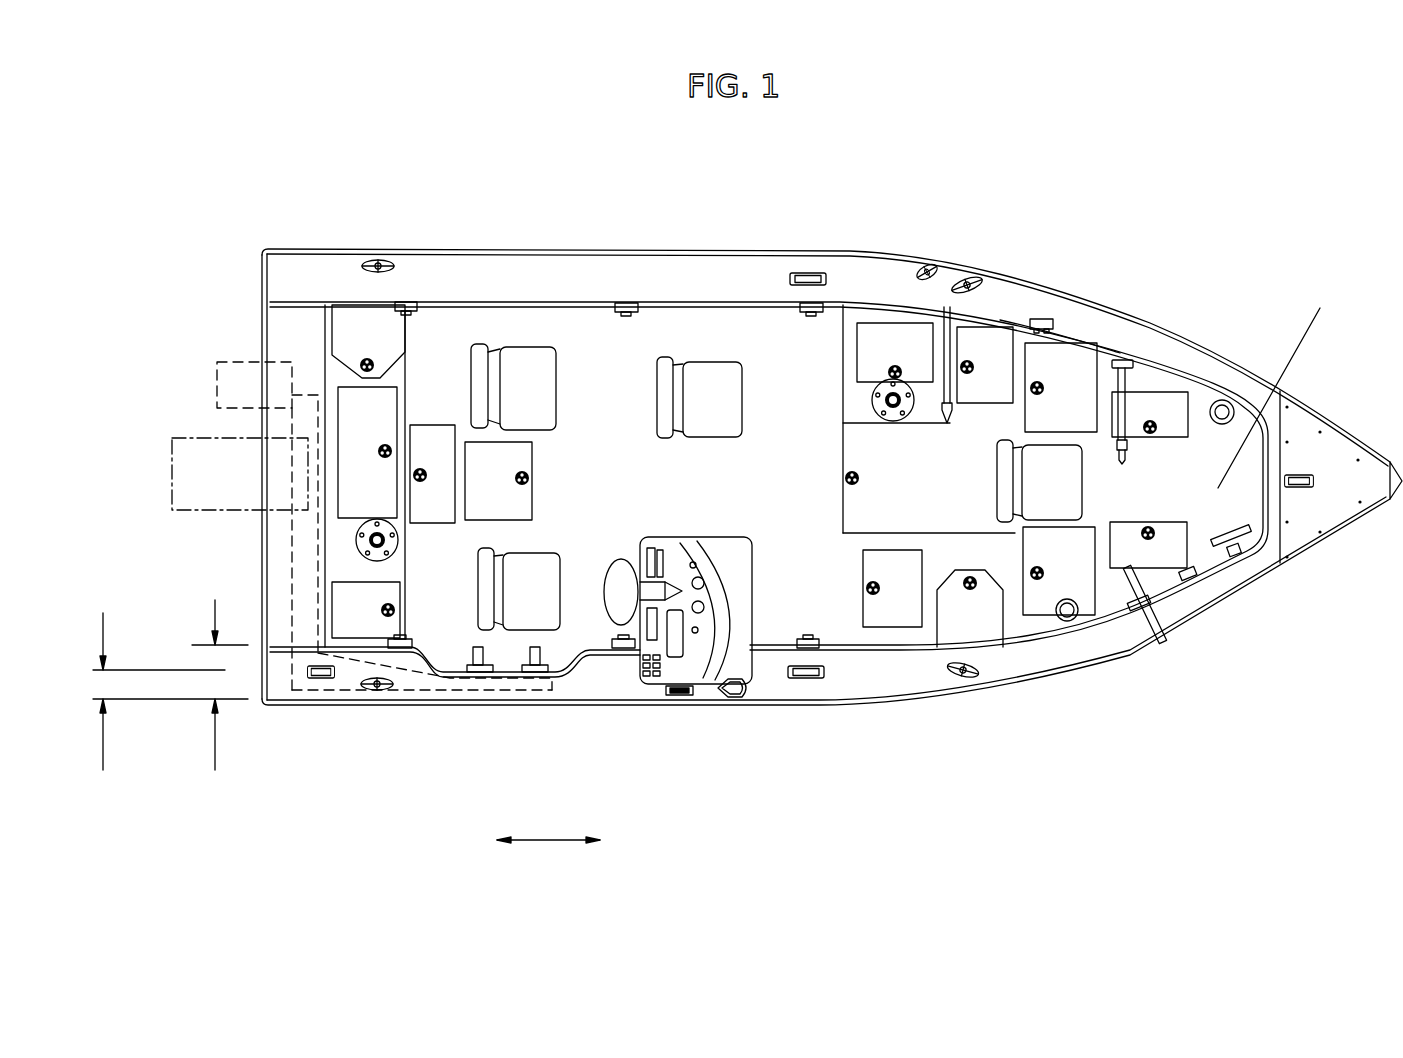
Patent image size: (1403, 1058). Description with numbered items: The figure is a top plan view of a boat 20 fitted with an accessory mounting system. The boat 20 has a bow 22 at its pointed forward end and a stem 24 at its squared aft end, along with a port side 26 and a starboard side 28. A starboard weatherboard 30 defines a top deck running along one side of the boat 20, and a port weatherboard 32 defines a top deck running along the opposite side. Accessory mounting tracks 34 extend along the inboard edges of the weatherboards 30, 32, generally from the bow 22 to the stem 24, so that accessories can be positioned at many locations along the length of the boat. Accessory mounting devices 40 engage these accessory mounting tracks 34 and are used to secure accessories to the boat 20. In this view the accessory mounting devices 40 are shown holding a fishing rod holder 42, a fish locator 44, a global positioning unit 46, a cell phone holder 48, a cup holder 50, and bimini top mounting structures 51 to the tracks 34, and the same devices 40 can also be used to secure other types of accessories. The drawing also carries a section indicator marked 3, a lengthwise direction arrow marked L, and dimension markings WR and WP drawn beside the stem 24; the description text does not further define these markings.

The boat 20 is at (1181, 219).
The bow 22 is at (1323, 412).
The stem 24 is at (263, 328).
The port side 26 is at (710, 250).
The starboard side 28 is at (852, 703).
The starboard weatherboard 30 is at (449, 267).
The port weatherboard 32 is at (607, 672).
The accessory mounting tracks 34 is at (551, 300).
The accessory mounting devices 40 is at (633, 306).
The fishing rod holder 42 is at (1165, 636).
The fish locator 44 is at (1280, 558).
The global positioning unit 46 is at (1050, 327).
The cell phone holder 48 is at (1190, 580).
The cup holder 50 is at (1067, 622).
The bimini top mounting structures 51 is at (628, 313).
The section line 3- 3 is at (1307, 314).
The rail width WR is at (164, 707).
The pad width WP is at (220, 700).
The length direction L is at (548, 854).